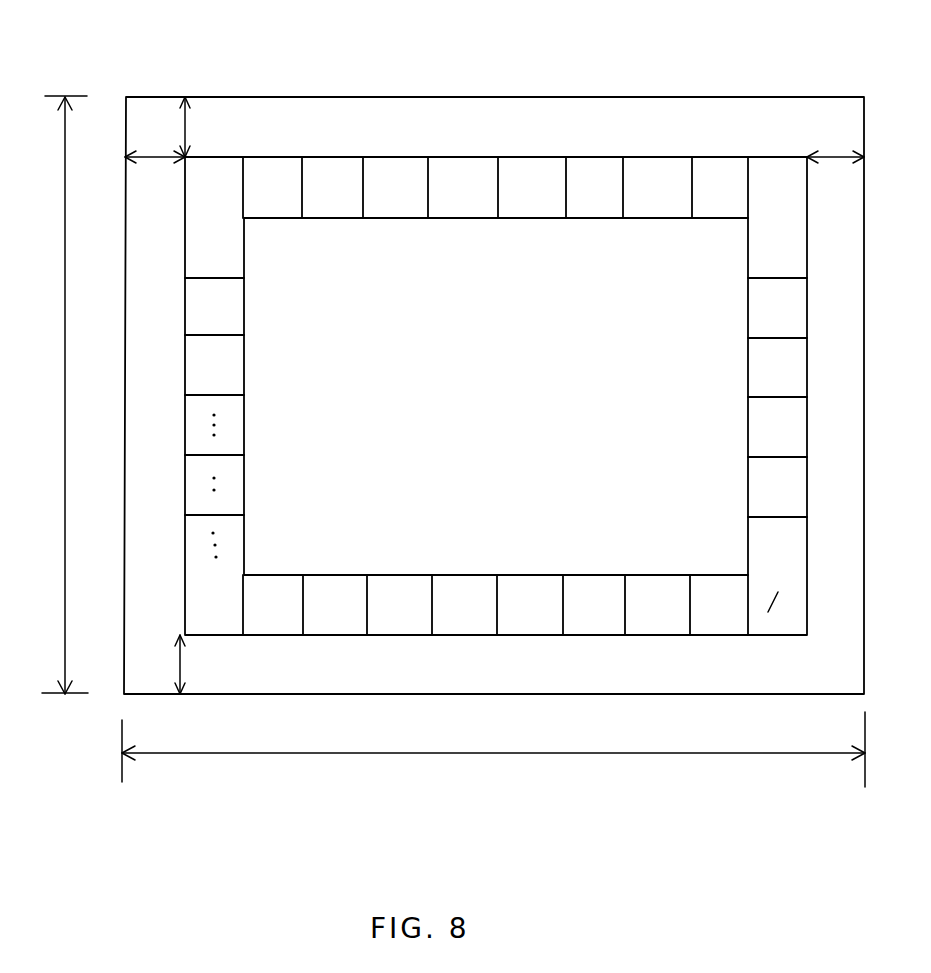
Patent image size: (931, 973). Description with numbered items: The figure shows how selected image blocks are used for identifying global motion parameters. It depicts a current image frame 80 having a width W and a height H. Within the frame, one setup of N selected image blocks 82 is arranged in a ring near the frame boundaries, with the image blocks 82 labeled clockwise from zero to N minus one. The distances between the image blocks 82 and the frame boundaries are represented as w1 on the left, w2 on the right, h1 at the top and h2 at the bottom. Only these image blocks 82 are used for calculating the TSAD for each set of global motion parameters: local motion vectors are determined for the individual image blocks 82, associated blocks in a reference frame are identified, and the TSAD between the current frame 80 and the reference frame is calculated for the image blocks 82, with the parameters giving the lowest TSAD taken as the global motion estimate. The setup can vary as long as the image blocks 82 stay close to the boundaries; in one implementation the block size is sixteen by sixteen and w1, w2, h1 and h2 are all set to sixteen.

The current image frame 80 is at (624, 97).
The image blocks 82 is at (527, 233).
The height H is at (54, 395).
The width W is at (493, 754).
The distance h1 is at (200, 127).
The distance h2 is at (194, 664).
The distance w1 is at (155, 172).
The distance w2 is at (835, 172).